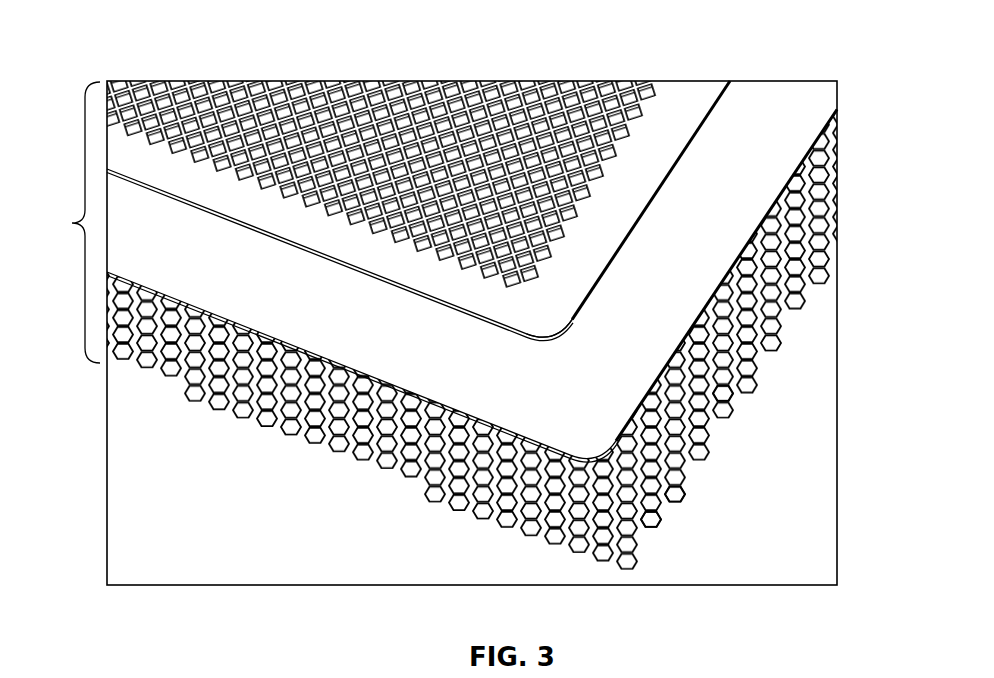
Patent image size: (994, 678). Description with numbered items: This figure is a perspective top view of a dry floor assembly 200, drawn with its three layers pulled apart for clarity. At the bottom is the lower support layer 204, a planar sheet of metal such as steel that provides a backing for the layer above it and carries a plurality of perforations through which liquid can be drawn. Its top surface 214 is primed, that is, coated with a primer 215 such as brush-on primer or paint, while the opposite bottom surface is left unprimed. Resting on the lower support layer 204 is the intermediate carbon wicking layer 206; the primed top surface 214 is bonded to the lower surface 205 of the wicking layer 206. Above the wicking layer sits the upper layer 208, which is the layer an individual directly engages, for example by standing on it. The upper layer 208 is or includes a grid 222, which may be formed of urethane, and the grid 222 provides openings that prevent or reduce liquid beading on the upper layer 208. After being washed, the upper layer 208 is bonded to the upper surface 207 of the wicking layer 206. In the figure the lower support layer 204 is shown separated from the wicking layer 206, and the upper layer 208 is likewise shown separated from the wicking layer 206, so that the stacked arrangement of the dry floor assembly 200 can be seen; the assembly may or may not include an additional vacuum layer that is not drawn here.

The dry floor assembly 200 is at (57, 222).
The lower support layer 204 is at (825, 300).
The lower surface of the wicking layer 205 is at (647, 520).
The wicking layer 206 is at (715, 191).
The upper surface of the wicking layer 207 is at (643, 342).
The upper layer 208 is at (662, 125).
The top surface of the lower support layer 214 is at (667, 515).
The primer 215 is at (740, 402).
The grid 222 is at (633, 83).